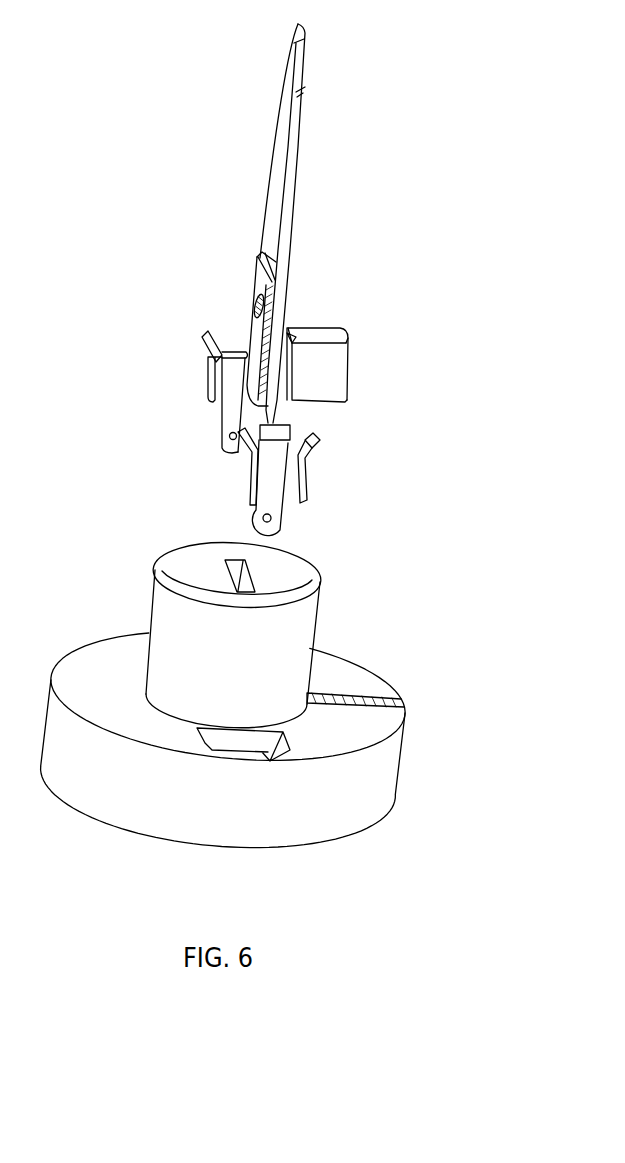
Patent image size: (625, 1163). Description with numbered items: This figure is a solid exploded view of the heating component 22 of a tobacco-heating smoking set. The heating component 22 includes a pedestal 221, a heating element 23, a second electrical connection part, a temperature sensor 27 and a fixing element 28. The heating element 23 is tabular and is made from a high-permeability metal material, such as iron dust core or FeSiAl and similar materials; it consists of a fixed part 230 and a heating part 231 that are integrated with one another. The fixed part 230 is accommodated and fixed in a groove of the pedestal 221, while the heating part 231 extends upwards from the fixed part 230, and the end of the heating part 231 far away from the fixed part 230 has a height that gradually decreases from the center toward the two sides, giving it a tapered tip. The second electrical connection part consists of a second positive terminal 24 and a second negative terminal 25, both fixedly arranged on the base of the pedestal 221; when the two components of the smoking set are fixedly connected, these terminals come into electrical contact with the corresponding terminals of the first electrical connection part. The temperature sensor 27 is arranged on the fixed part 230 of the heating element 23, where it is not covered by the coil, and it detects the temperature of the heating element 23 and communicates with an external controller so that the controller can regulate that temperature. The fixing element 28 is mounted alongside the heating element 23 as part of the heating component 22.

The heating component 22 is at (78, 63).
The pedestal 221 is at (403, 712).
The heating element 23 is at (148, 188).
The fixed part 230 is at (255, 289).
The heating part 231 is at (275, 186).
The second positive terminal 24 is at (210, 380).
The second negative terminal 25 is at (262, 483).
The temperature sensor 27 is at (292, 343).
The fixing element 28 is at (335, 378).